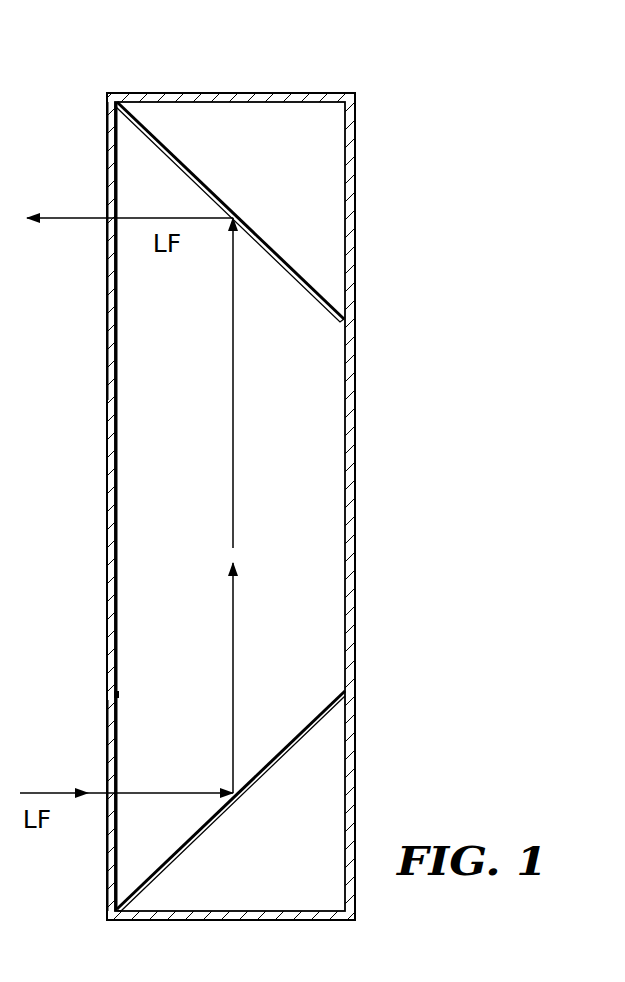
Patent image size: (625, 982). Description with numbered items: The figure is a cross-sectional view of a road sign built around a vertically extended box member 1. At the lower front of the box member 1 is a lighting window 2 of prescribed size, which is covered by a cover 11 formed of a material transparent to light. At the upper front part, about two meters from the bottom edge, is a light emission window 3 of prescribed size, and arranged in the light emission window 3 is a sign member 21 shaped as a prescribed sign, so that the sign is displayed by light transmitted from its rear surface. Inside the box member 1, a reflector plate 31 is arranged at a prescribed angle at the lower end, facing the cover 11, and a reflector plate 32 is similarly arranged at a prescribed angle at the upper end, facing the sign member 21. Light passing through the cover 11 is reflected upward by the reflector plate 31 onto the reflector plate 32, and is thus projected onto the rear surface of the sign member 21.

The box member 1 is at (278, 92).
The lighting window 2 is at (107, 890).
The sign member 21 is at (107, 142).
The light emission window 3 is at (107, 317).
The cover 11 is at (107, 713).
The reflector plate 31 is at (280, 757).
The reflector plate 32 is at (280, 254).